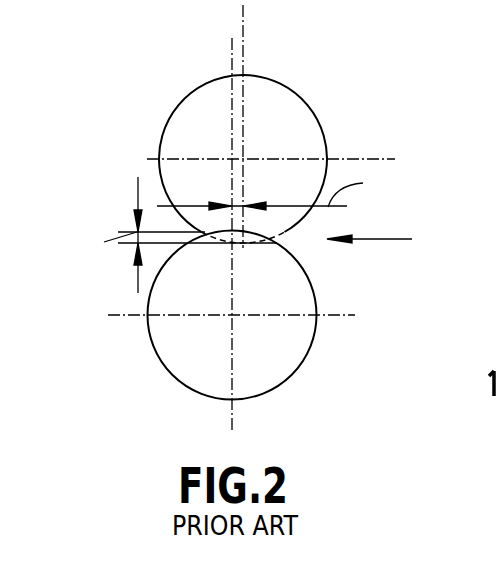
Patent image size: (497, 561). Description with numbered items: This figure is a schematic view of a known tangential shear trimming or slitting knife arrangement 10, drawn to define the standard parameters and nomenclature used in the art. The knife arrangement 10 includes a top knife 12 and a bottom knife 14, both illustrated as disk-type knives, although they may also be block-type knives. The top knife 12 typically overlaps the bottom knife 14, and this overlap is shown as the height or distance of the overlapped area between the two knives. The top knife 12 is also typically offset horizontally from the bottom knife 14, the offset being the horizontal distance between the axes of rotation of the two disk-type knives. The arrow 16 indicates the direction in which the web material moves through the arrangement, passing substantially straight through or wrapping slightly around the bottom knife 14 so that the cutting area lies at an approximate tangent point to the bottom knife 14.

The knife arrangement 10 is at (100, 124).
The top knife 12 is at (182, 102).
The bottom knife 14 is at (180, 382).
The arrows 16 is at (385, 239).